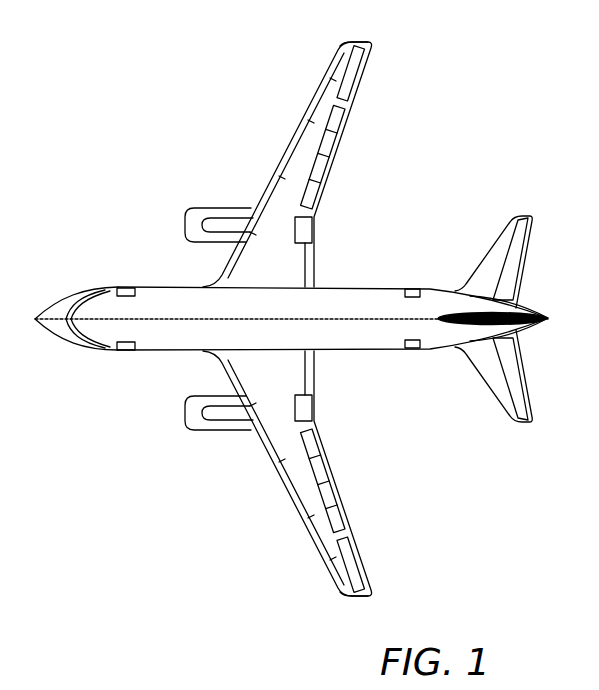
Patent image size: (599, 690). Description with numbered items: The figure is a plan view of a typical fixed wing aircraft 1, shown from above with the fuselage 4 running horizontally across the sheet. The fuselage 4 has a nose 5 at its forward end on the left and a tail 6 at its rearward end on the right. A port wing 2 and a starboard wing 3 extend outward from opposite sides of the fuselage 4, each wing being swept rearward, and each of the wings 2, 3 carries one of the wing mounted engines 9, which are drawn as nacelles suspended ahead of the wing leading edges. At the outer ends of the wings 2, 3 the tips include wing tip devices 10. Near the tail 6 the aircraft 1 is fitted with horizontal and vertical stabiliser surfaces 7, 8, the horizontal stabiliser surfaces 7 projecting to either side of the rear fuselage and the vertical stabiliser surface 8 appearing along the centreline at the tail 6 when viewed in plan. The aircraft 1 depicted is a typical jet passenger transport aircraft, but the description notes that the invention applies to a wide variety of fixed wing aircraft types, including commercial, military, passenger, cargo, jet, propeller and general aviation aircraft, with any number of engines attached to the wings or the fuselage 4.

The fixed wing aircraft 1 is at (297, 307).
The port wing 2 is at (312, 497).
The starboard wing 3 is at (310, 145).
The fuselage 4 is at (117, 300).
The nose 5 is at (50, 320).
The tail 6 is at (543, 323).
The horizontal stabiliser surfaces 7 is at (494, 262).
The vertical stabiliser surface 8 is at (457, 323).
The wing mounted engines 9 is at (202, 222).
The wing tip devices 10 is at (370, 44).